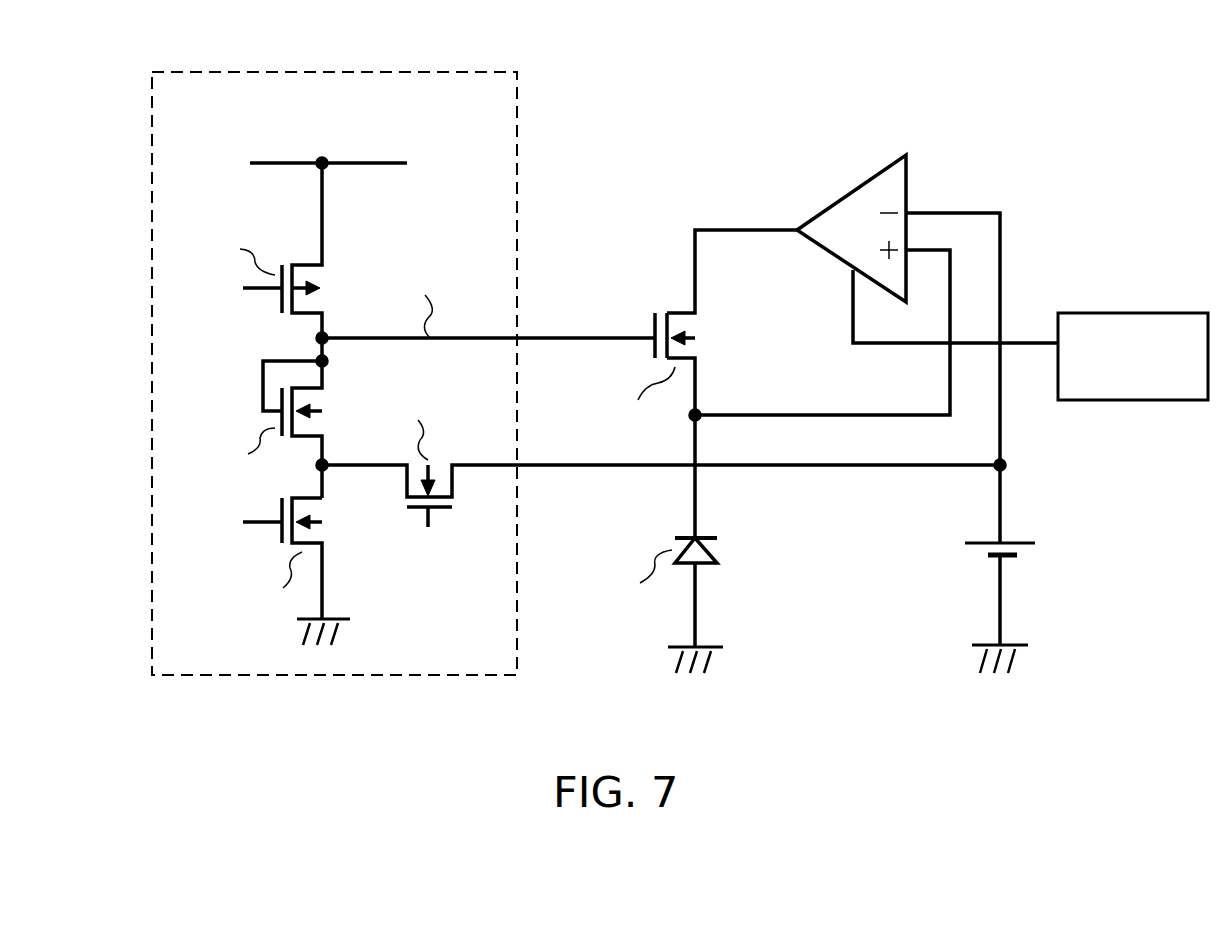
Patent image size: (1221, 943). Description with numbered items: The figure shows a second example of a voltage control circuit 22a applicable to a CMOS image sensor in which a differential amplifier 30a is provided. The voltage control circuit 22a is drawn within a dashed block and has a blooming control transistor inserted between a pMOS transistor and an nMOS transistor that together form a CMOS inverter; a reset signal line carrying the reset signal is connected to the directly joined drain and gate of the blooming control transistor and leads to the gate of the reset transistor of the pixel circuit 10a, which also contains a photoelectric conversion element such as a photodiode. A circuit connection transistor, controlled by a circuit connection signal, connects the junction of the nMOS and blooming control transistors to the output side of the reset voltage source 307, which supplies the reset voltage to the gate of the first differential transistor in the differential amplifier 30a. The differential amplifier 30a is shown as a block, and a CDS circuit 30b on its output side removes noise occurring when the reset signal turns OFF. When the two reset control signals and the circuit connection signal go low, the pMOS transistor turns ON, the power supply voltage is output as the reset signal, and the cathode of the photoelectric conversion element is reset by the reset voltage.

The voltage control circuit 22a is at (430, 72).
The pixel circuit 10a is at (667, 187).
The differential amplifier 30a is at (848, 193).
The CDS circuit 30b is at (1166, 313).
The reset voltage source 307 is at (1023, 565).